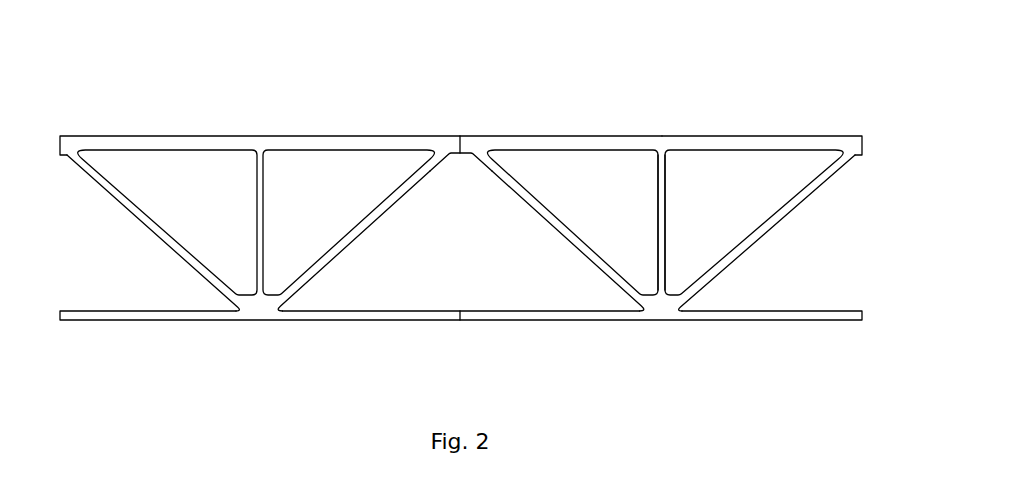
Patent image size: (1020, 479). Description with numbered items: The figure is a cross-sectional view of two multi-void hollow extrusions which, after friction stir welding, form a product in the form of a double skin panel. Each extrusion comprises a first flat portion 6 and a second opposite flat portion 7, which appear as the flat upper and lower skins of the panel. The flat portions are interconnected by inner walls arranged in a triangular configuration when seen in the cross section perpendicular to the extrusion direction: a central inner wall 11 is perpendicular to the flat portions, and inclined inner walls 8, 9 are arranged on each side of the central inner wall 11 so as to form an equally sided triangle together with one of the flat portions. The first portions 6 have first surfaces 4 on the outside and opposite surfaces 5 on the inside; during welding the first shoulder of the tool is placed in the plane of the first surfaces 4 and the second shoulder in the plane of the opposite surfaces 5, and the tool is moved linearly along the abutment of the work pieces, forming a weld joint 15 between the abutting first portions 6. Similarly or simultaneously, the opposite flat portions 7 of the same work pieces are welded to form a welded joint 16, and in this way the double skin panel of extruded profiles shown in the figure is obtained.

The first surfaces of first portions 4 is at (488, 136).
The opposite surfaces of first portions 5 is at (472, 154).
The first portions of the work pieces 6 is at (705, 143).
The second portions of the work pieces 7 is at (538, 313).
The inclined inner wall 8 is at (757, 231).
The inclined inner wall 9 is at (545, 220).
The central inner wall 11 is at (662, 212).
The joint between flat portions 6 15 is at (462, 135).
The joint between flat portions 7 16 is at (458, 318).